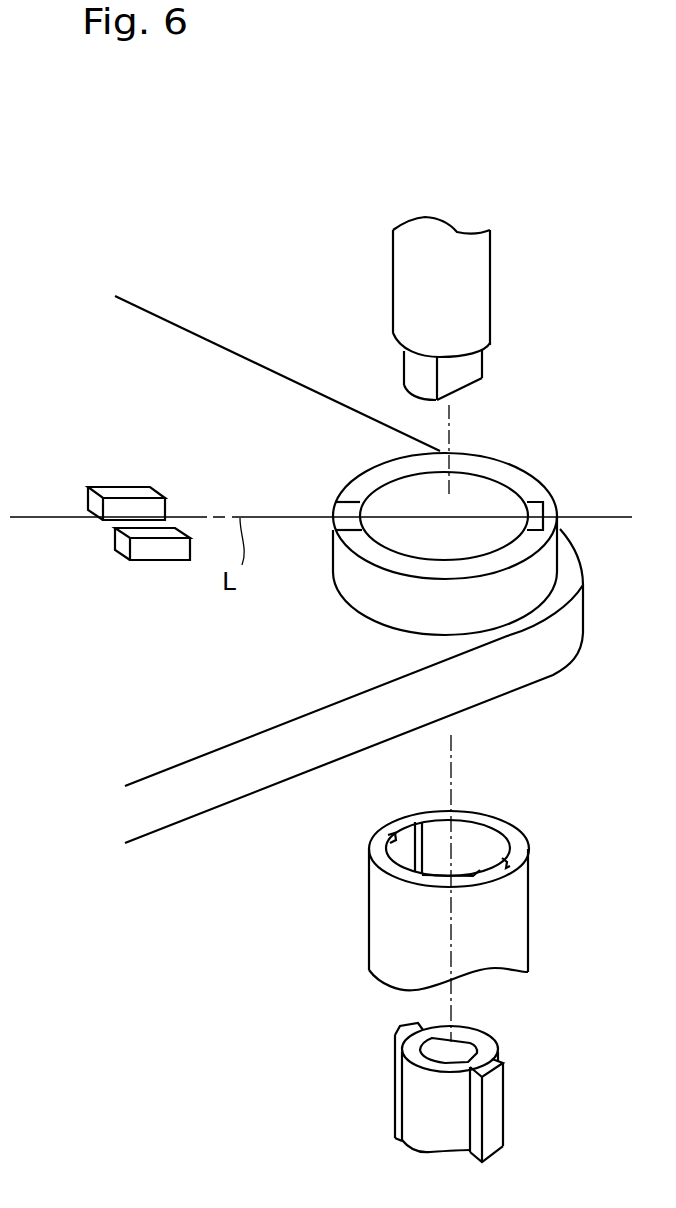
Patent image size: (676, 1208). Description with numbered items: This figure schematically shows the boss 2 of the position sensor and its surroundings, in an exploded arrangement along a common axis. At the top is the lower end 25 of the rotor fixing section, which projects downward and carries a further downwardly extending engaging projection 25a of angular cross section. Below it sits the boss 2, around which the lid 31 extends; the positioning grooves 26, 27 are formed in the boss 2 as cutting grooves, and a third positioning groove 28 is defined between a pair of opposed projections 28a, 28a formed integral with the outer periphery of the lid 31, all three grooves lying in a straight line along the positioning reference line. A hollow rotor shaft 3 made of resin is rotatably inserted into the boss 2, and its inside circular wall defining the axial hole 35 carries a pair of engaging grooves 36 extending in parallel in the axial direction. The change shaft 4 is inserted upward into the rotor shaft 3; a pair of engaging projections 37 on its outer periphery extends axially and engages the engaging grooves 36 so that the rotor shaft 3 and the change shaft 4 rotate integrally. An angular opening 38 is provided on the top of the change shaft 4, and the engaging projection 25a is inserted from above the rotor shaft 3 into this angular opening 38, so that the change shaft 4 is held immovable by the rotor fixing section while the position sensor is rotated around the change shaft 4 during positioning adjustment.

The lower end of the rotor fixing section 25 is at (468, 287).
The engaging projection 25a is at (405, 372).
The lid 31 is at (195, 378).
The boss 2 is at (455, 543).
The positioning groove 26 is at (545, 500).
The positioning groove 27 is at (333, 503).
The positioning groove 28 is at (137, 522).
The opposed projection 28a is at (120, 492).
The rotor shaft 3 is at (440, 878).
The axial hole 35 is at (480, 837).
The engaging groove 36 is at (400, 823).
The change shaft 4 is at (447, 1073).
The engaging projection 37 is at (398, 1030).
The angular opening 38 is at (465, 1047).